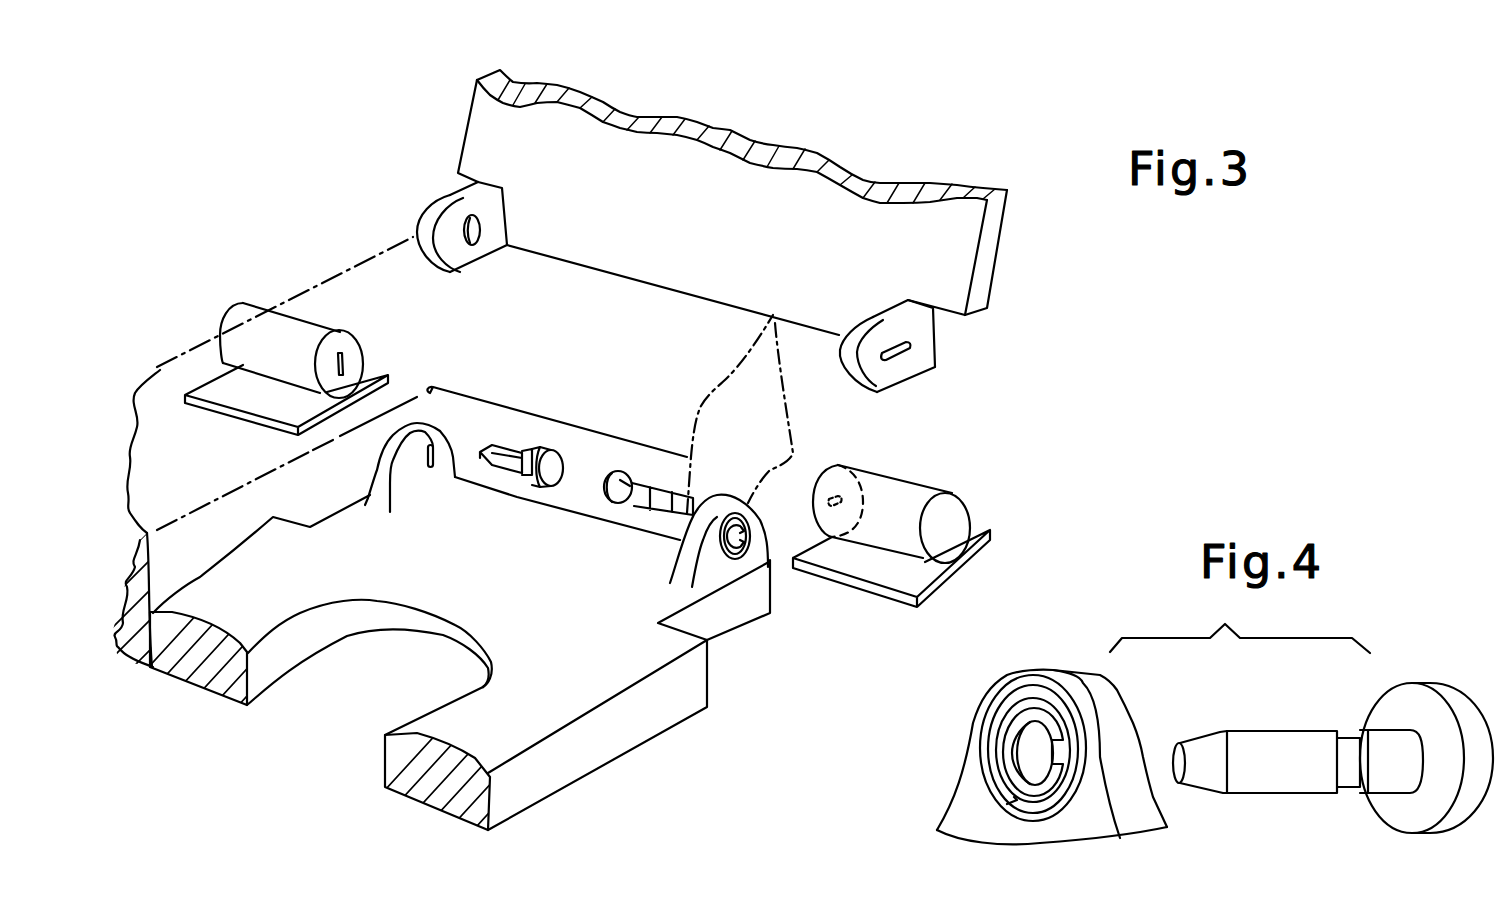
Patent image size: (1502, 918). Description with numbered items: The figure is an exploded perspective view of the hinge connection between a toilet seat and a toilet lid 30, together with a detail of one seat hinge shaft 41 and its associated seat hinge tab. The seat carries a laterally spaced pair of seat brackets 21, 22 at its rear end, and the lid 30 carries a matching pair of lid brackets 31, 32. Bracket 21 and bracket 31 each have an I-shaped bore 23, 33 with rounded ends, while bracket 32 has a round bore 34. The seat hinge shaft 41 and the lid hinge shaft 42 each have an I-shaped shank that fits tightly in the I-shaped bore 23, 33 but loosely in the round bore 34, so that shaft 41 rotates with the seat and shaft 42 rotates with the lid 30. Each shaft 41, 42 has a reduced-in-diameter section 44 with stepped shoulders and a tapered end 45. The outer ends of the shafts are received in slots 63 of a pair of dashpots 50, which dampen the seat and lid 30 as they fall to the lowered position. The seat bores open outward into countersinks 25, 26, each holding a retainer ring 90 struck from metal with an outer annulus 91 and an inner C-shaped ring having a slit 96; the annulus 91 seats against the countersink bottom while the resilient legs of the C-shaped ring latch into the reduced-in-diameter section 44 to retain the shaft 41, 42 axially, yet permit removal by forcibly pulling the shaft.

In FIG. 3, the seat bracket 21 is at (383, 477).
In FIG. 4, the seat bracket 21 is at (1088, 675).
In FIG. 3, the seat bracket 22 is at (693, 550).
In FIG. 3, the I-shaped bore 23 is at (425, 467).
In FIG. 4, the countersink 25 is at (1013, 820).
In FIG. 3, the countersink 26 is at (738, 559).
In FIG. 3, the toilet lid 30 is at (477, 117).
In FIG. 3, the lid bracket 31 is at (870, 322).
In FIG. 3, the lid bracket 32 is at (420, 240).
In FIG. 3, the I-shaped bore 33 is at (900, 345).
In FIG. 3, the round bore 34 is at (465, 225).
In FIG. 3, the seat hinge shaft 41 is at (560, 458).
In FIG. 4, the seat hinge shaft 41 is at (1447, 692).
In FIG. 3, the lid hinge shaft 42 is at (623, 473).
In FIG. 4, the reduced-in-diameter section 44 is at (1350, 745).
In FIG. 4, the tapered end 45 is at (1217, 745).
In FIG. 3, the dashpot 50 is at (308, 322).
In FIG. 3, the slot 63 is at (330, 365).
In FIG. 3, the retainer ring 90 is at (750, 552).
In FIG. 4, the retainer ring 90 is at (1002, 687).
In FIG. 4, the outer annulus 91 is at (1027, 690).
In FIG. 4, the slit 96 is at (1063, 755).